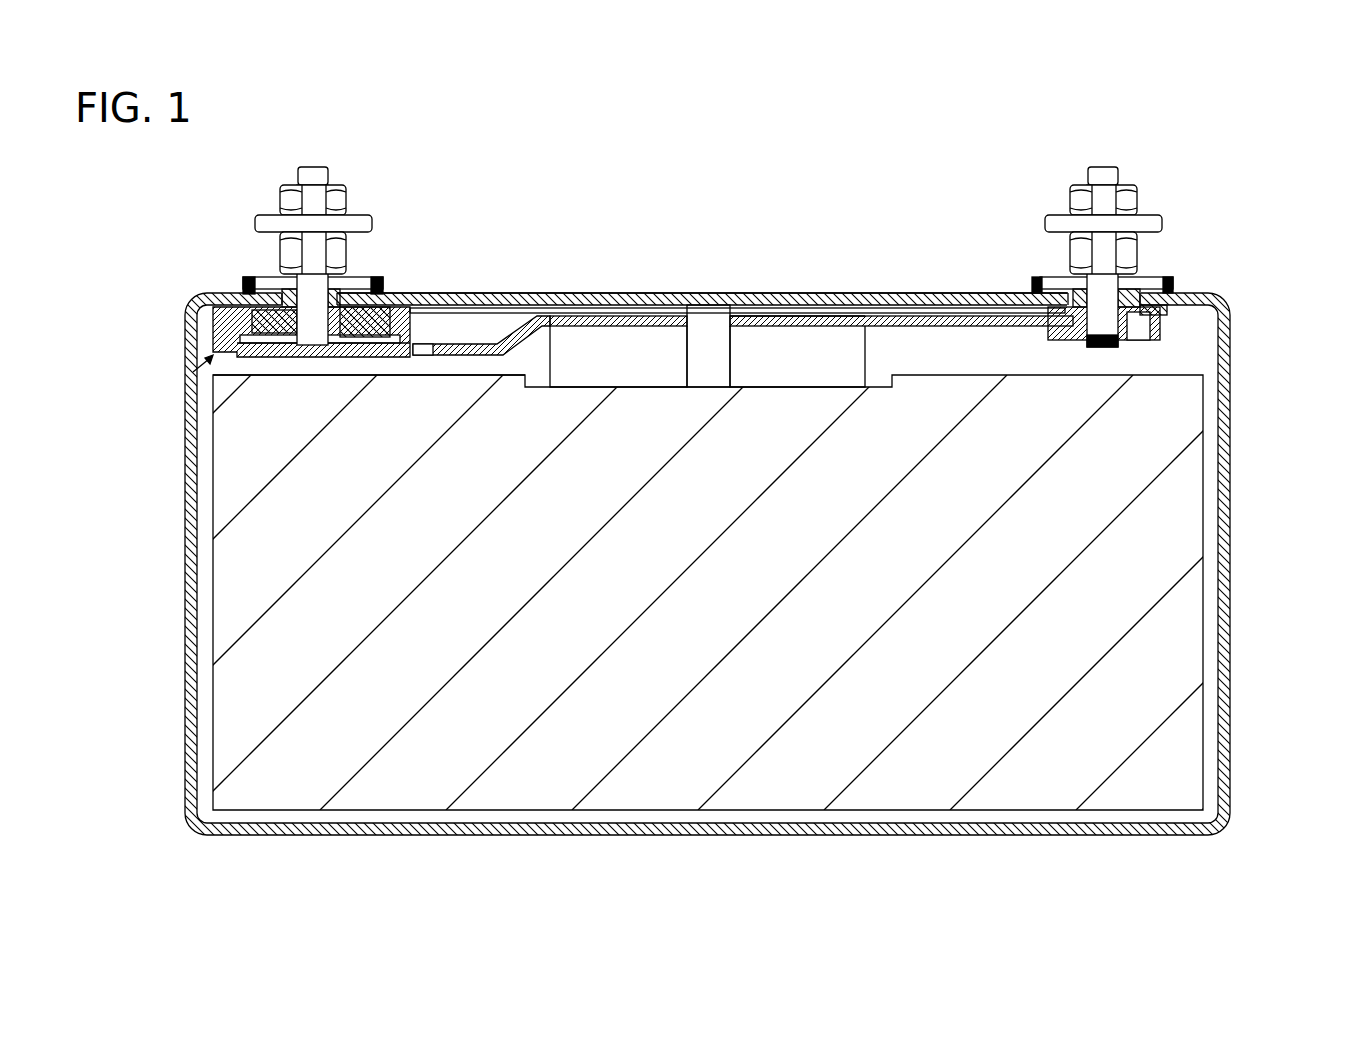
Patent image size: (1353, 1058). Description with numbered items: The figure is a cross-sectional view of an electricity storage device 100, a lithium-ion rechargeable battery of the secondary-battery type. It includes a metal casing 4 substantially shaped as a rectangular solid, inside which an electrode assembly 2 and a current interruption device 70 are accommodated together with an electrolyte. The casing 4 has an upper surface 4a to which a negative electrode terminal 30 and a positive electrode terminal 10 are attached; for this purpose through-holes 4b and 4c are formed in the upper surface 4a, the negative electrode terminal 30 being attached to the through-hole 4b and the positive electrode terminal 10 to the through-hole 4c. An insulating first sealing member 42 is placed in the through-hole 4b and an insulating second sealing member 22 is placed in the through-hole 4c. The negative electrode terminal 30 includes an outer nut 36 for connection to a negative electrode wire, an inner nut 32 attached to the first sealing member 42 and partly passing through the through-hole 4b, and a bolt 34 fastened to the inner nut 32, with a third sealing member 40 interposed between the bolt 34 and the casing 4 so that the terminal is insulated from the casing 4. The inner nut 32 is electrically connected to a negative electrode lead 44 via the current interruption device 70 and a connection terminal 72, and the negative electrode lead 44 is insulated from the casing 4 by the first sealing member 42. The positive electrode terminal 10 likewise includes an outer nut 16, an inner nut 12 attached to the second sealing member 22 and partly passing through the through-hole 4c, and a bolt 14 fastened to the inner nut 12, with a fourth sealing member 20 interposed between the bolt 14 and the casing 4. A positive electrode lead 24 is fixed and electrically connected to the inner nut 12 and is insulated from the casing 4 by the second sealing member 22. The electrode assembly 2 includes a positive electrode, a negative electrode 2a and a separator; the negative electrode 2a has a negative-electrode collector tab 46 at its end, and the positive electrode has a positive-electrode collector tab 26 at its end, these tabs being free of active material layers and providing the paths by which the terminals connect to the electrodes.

The electricity storage device 100 is at (987, 116).
The electrode assembly 2 is at (1140, 652).
The negative electrode 2a is at (318, 388).
The casing 4 is at (1232, 563).
The upper surface 4a is at (720, 293).
The through-hole 4b is at (340, 283).
The through-hole 4c is at (1073, 293).
The positive electrode terminal 10 is at (1296, 183).
The inner nut 12 is at (1133, 335).
The bolt 14 is at (1120, 262).
The outer nut 16 is at (1120, 205).
The fourth sealing member 20 is at (1032, 287).
The second sealing member 22 is at (885, 318).
The positive electrode lead 24 is at (845, 320).
The positive-electrode collector tab 26 is at (775, 345).
The negative electrode terminal 30 is at (124, 183).
The inner nut 32 is at (270, 323).
The bolt 34 is at (298, 262).
The outer nut 36 is at (298, 205).
The third sealing member 40 is at (388, 287).
The first sealing member 42 is at (427, 352).
The negative electrode lead 44 is at (607, 318).
The negative-electrode collector tab 46 is at (632, 345).
The current interruption device 70 is at (195, 378).
The connection terminal 72 is at (452, 318).